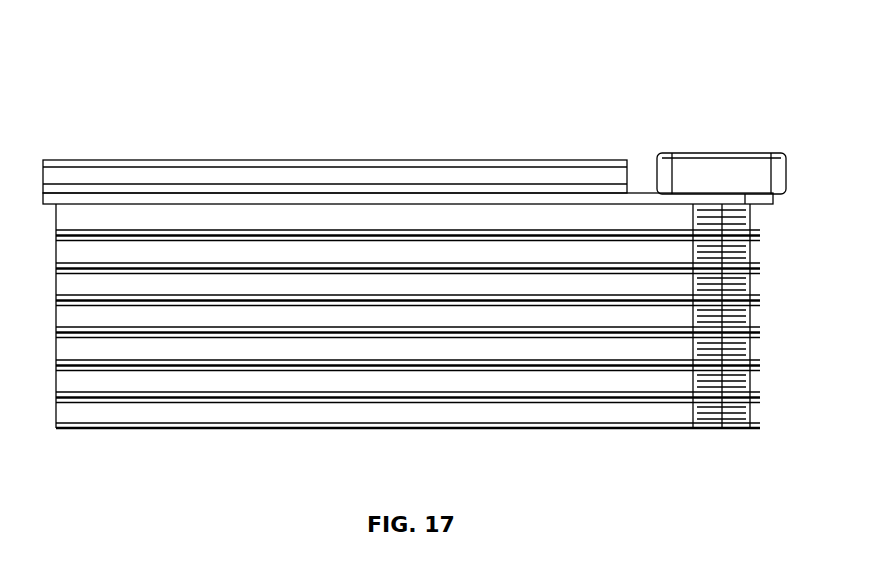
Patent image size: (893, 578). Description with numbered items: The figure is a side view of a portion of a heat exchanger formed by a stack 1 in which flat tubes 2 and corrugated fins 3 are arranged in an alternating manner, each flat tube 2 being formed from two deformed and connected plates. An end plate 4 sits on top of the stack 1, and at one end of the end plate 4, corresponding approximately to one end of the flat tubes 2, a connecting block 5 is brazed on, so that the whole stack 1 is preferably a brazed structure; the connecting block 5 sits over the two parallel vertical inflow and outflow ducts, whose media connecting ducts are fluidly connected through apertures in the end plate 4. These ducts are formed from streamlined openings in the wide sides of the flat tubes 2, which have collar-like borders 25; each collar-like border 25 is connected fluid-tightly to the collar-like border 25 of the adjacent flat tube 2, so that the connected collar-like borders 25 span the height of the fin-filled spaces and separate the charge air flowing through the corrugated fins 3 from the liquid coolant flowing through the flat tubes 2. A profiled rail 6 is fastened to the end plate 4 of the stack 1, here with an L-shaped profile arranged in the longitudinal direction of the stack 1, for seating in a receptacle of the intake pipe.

The stack 1 is at (102, 454).
The flat tubes 2 is at (298, 362).
The fins 3 is at (405, 383).
The end plate 4 is at (188, 197).
The connecting block 5 is at (712, 177).
The profiled rails 6 is at (348, 177).
The collar-like borders 25 is at (735, 373).